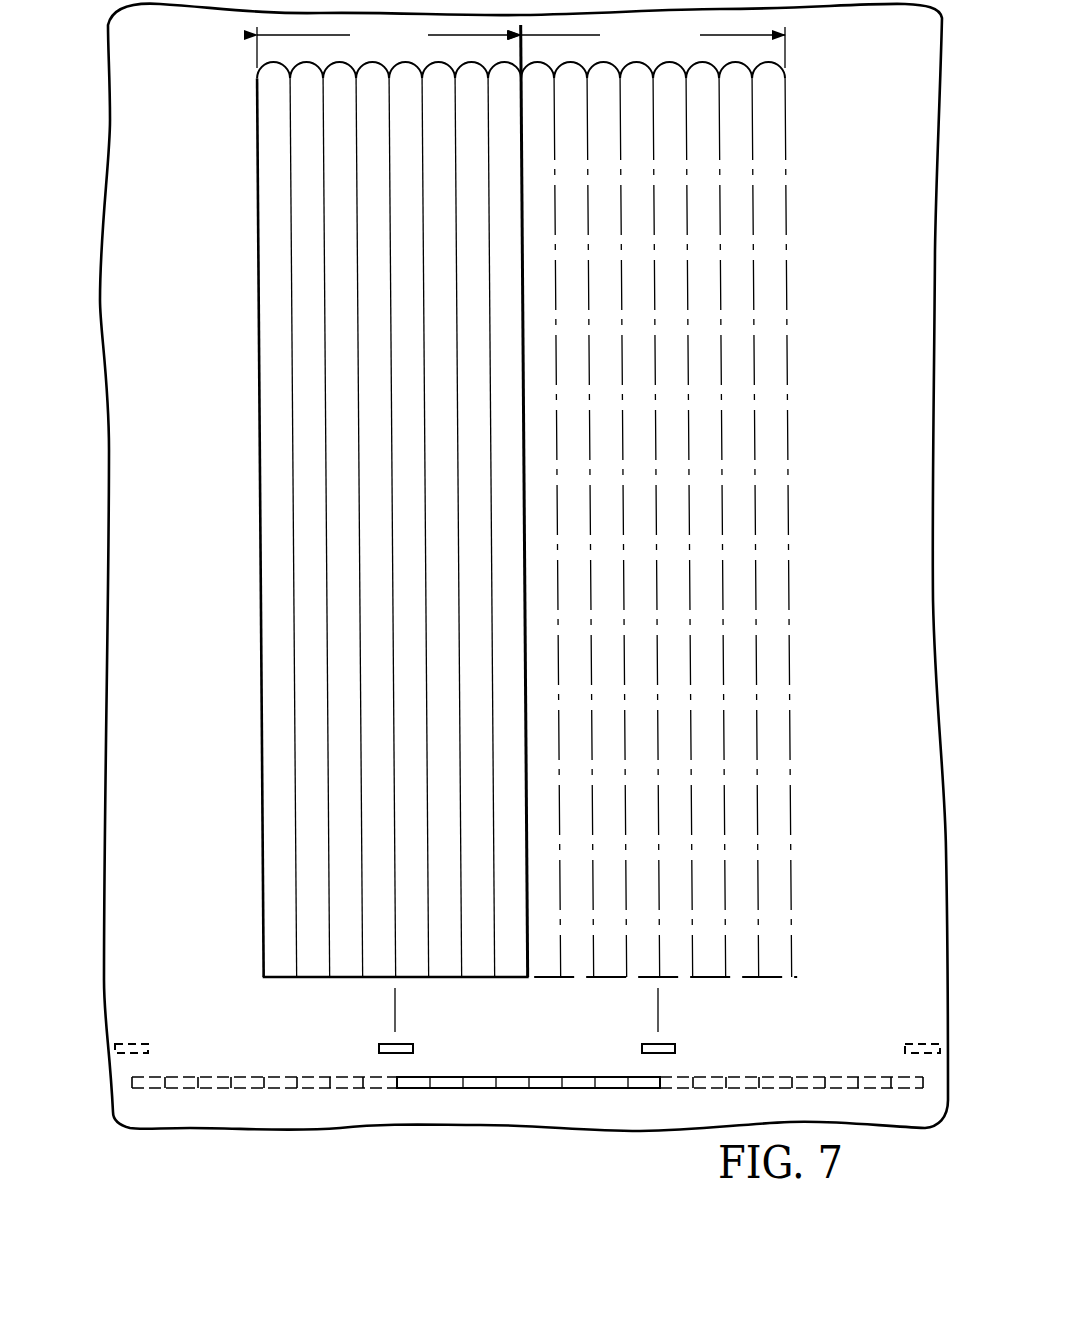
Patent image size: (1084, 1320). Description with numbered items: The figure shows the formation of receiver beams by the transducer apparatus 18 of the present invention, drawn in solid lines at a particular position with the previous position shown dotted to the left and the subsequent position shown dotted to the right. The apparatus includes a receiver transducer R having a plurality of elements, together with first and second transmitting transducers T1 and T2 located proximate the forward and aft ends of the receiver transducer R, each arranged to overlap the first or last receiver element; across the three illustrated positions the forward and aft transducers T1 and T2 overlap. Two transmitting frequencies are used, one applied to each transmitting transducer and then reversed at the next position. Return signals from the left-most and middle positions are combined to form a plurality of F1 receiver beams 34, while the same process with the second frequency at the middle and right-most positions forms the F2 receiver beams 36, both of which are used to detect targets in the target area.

The transducer array 18 is at (858, 238).
The receiver beams 34 is at (248, 122).
The F2 receiver beams 36 is at (795, 122).
The first transmitting transducer T1 is at (912, 1043).
The second transmitting transducer T2 is at (130, 1043).
The receiver transducer R is at (535, 1090).